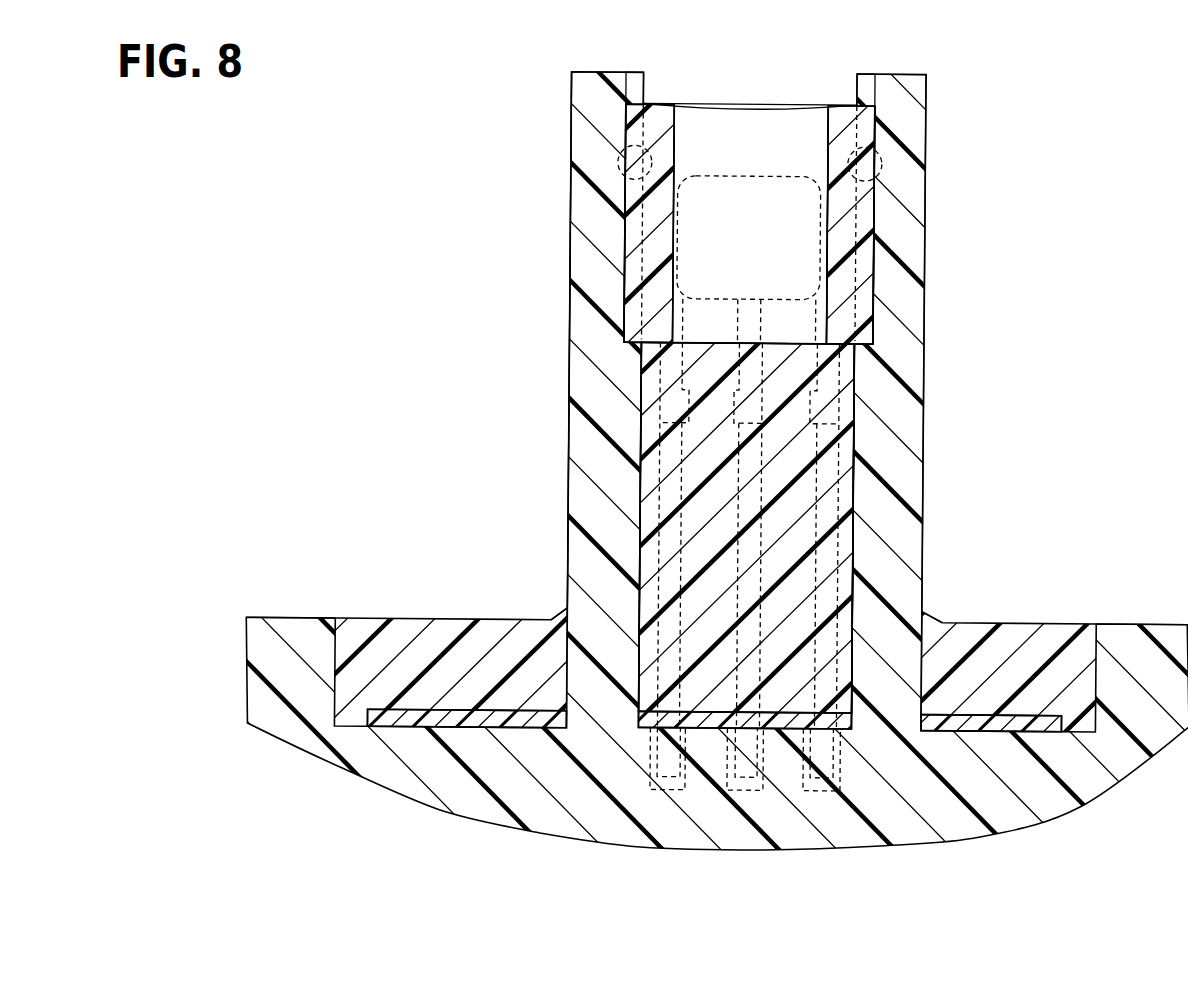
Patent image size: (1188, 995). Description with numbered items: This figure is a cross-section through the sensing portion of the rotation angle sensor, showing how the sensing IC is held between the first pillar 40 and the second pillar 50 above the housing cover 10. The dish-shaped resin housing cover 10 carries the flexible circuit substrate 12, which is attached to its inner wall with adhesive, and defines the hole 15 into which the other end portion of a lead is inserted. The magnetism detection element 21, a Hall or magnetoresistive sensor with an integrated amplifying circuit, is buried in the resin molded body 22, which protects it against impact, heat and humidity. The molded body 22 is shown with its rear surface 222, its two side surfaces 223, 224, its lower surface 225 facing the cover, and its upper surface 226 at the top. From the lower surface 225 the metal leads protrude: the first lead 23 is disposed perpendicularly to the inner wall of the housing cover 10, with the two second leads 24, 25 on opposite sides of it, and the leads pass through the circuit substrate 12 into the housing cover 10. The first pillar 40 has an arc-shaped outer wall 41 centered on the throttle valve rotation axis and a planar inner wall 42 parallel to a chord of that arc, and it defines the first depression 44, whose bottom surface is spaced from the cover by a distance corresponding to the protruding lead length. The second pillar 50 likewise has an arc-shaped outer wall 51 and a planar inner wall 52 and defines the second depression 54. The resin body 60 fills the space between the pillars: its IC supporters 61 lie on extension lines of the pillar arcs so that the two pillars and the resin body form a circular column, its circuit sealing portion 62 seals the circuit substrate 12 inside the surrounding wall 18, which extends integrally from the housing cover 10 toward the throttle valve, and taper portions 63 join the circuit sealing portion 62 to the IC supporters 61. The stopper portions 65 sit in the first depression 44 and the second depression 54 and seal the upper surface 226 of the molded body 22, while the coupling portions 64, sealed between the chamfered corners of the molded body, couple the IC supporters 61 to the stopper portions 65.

The housing cover 10 is at (1005, 795).
The circuit substrate 12 is at (970, 713).
The hole 15 is at (682, 782).
The surrounding wall 18 is at (290, 619).
The magnetism detection element 21 is at (700, 300).
The molded body 22 is at (805, 147).
The first lead 23 is at (728, 499).
The second lead 24 is at (850, 453).
The second lead 25 is at (655, 548).
The first pillar 40 is at (903, 77).
The outer wall 41 is at (922, 331).
The inner wall 42 is at (845, 492).
The first depression 44 is at (858, 208).
The second pillar 50 is at (598, 73).
The outer wall 51 is at (570, 105).
The inner wall 52 is at (640, 456).
The second depression 54 is at (640, 233).
The resin body 60 is at (795, 588).
The IC supporter 61 is at (782, 547).
The circuit sealing portion 62 is at (461, 647).
The taper portion 63 is at (556, 612).
The coupling portion 64 is at (630, 171).
The stopper portion 65 is at (632, 87).
The rear surface 222 is at (735, 145).
The side surface 223 is at (873, 269).
The side surface 224 is at (625, 279).
The lower surface 225 is at (782, 344).
The upper surface 226 is at (772, 104).